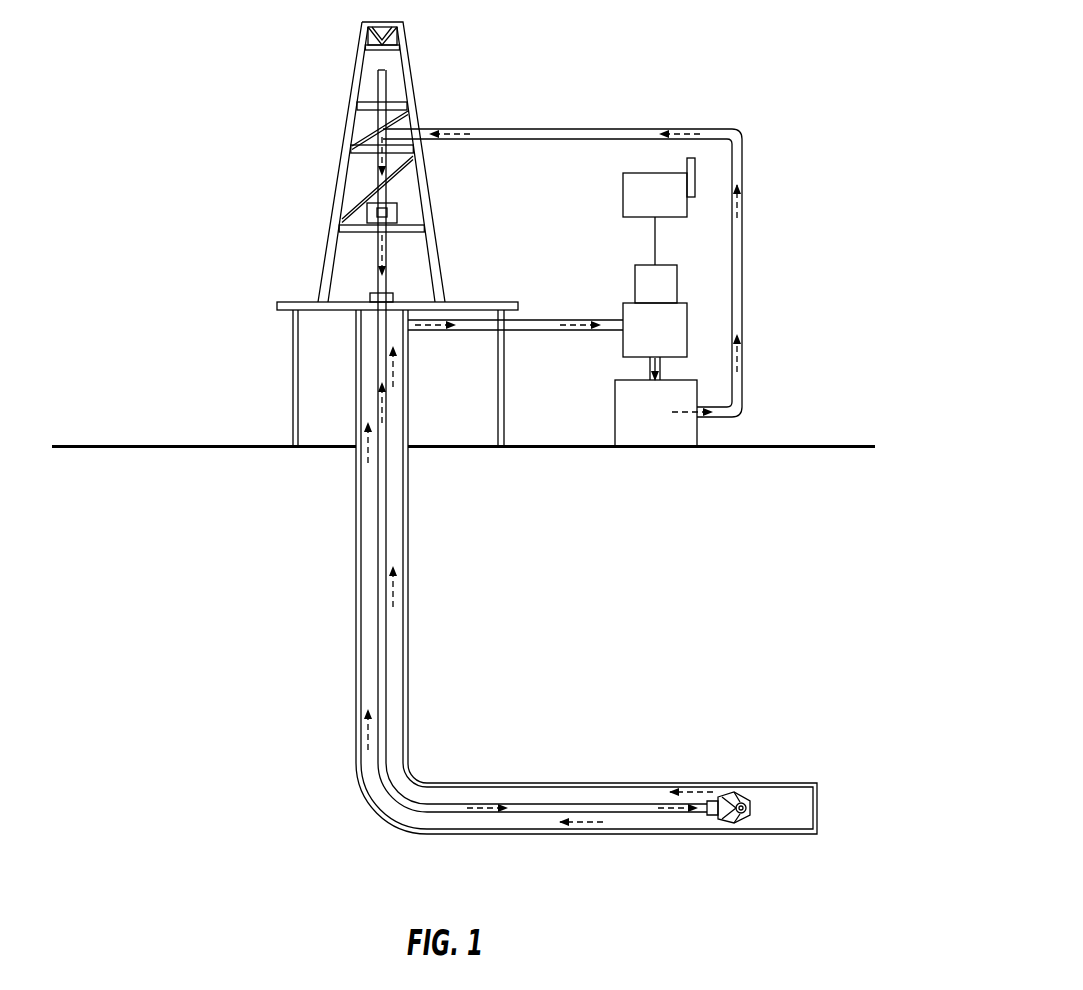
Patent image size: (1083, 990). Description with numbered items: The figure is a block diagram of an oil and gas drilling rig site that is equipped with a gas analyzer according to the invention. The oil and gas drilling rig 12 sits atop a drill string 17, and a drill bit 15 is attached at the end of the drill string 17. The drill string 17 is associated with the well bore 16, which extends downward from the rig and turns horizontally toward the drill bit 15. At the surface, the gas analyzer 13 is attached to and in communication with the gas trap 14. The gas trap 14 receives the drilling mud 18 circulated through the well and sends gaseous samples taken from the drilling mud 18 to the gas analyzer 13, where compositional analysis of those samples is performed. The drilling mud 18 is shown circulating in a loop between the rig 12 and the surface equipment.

The oil and gas drilling rig 12 is at (340, 162).
The gas analyzer 13 is at (668, 207).
The gas trap 14 is at (668, 341).
The drill bit 15 is at (727, 822).
The well bore 16 is at (367, 775).
The drill string 17 is at (380, 580).
The drilling mud 18 is at (690, 128).